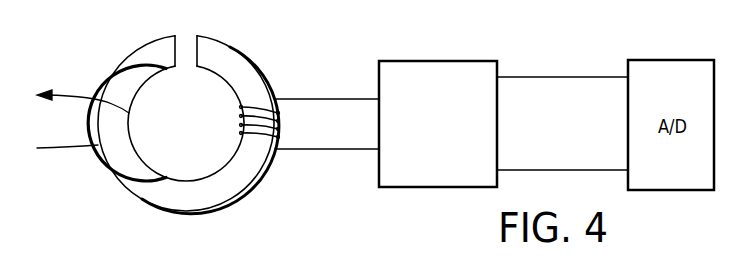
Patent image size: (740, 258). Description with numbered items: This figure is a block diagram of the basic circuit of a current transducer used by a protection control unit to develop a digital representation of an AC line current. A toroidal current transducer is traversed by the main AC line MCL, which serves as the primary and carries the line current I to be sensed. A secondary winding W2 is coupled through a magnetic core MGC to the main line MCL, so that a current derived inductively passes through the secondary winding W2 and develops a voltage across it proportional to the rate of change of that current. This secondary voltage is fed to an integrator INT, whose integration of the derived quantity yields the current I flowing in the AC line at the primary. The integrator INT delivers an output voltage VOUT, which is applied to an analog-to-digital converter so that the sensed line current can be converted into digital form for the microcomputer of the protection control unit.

The magnetic core MGC is at (128, 182).
The AC line MCL is at (83, 83).
The line current I is at (62, 151).
The secondary winding W2 is at (279, 122).
The integrator INT is at (407, 60).
The output voltage VOUT is at (565, 77).